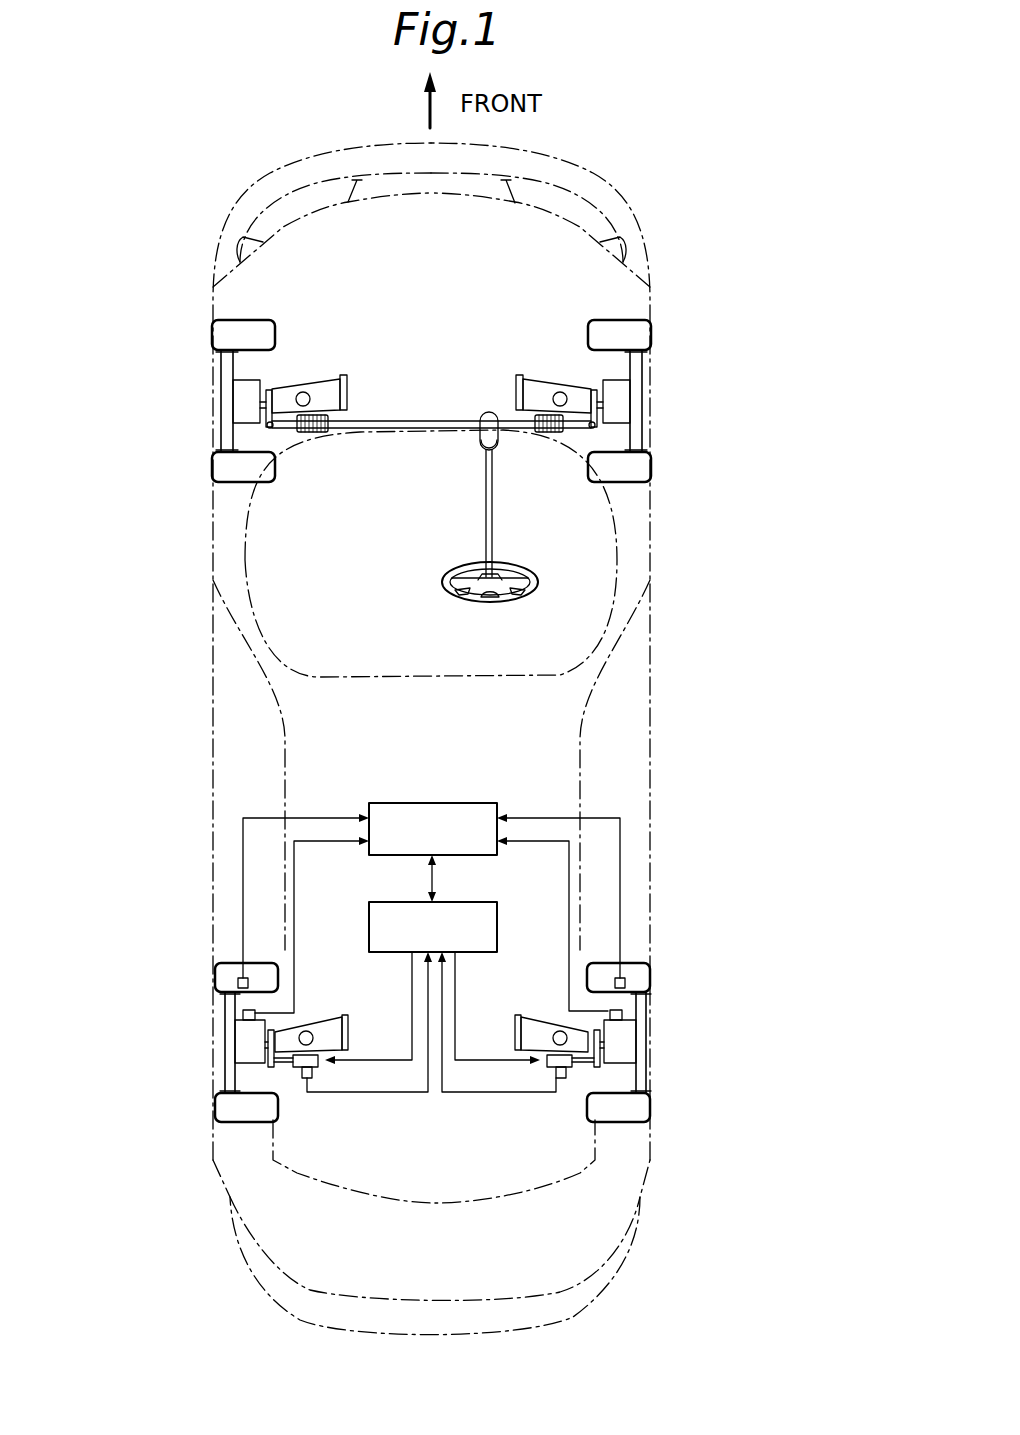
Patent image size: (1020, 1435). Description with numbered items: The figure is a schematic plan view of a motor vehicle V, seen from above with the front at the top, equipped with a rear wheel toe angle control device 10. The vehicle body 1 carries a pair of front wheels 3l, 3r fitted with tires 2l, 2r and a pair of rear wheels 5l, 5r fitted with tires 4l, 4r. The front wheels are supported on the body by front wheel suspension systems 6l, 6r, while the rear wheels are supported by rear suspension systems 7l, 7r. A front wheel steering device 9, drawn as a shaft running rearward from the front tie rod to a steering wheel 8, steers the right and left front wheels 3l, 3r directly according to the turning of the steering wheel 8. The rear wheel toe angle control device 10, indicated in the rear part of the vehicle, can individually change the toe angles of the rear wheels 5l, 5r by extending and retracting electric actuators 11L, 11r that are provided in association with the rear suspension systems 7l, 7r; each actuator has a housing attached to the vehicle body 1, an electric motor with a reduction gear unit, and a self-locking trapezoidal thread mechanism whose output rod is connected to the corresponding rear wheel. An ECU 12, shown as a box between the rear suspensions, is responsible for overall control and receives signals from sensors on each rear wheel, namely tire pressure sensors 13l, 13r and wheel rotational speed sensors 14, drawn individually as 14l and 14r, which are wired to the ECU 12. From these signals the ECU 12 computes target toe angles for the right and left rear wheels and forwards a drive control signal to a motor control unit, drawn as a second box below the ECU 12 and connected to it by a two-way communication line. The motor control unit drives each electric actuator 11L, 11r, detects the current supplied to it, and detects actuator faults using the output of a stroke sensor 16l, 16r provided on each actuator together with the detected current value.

The vehicle V is at (662, 142).
The vehicle body 1 is at (655, 264).
The tire 2l is at (222, 476).
The tire 2r is at (640, 472).
The front wheel 3l is at (213, 362).
The front wheel 3r is at (642, 362).
The tire 4l is at (220, 1108).
The tire 4r is at (645, 1108).
The rear wheel 5l is at (222, 1030).
The rear wheel 5r is at (646, 1030).
The front wheel suspension system 6l is at (283, 371).
The front wheel suspension system 6r is at (581, 371).
The rear suspension system 7l is at (321, 1012).
The rear suspension system 7r is at (553, 1012).
The steering wheel 8 is at (508, 600).
The front wheel steering device 9 is at (508, 470).
The rear wheel toe angle control device 10 is at (441, 1137).
The electric actuator 11L is at (292, 1064).
The electric actuator 11r is at (573, 1064).
The ECU (electronic control unit) 12 is at (468, 803).
The tire pressure sensor 13l is at (240, 978).
The tire pressure sensor 13r is at (624, 978).
The wheel rotational speed sensor 14 is at (497, 930).
The wheel rotational speed sensor 14l is at (243, 1010).
The wheel rotational speed sensor 14r is at (622, 1008).
The stroke sensor 16l is at (306, 1079).
The stroke sensor 16r is at (561, 1079).